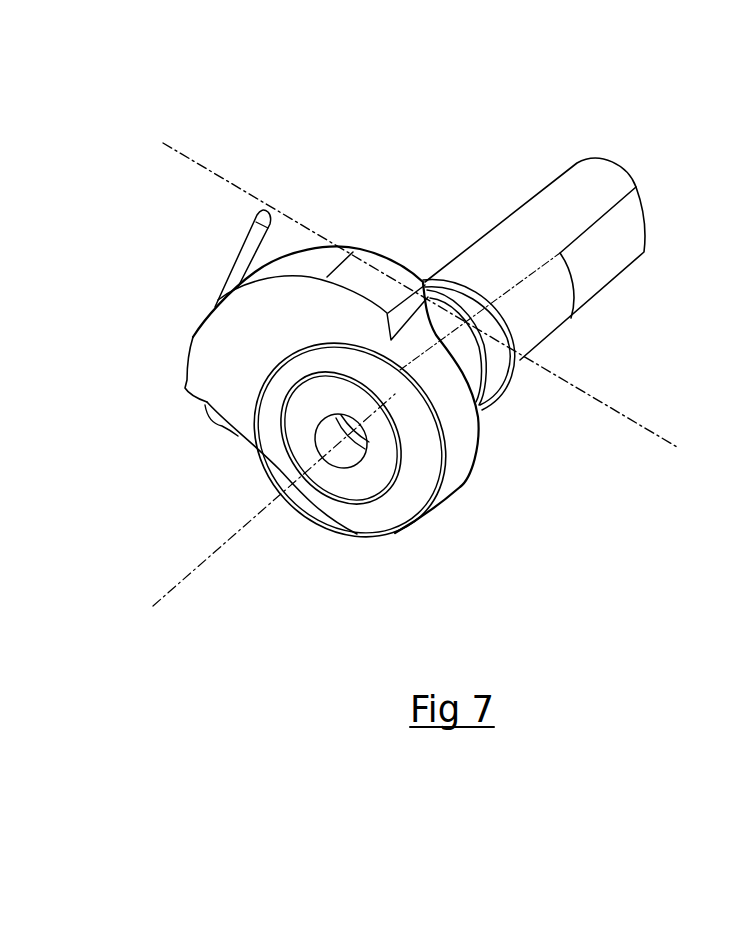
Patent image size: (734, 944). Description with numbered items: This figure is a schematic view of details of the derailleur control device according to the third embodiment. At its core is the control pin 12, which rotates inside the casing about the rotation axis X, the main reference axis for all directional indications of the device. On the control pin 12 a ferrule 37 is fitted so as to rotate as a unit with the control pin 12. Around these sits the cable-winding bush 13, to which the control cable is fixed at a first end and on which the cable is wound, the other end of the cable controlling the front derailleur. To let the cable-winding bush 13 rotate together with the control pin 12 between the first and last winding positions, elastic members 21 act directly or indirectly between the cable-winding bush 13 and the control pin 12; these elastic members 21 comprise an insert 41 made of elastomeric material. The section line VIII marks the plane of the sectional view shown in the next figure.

The control pin 12 is at (510, 245).
The cable-winding bush 13 is at (233, 330).
The elastic members 21 is at (401, 508).
The ferrule 37 is at (302, 449).
The insert 41 is at (283, 378).
The section line VIII is at (215, 113).
The rotation axis X is at (274, 509).